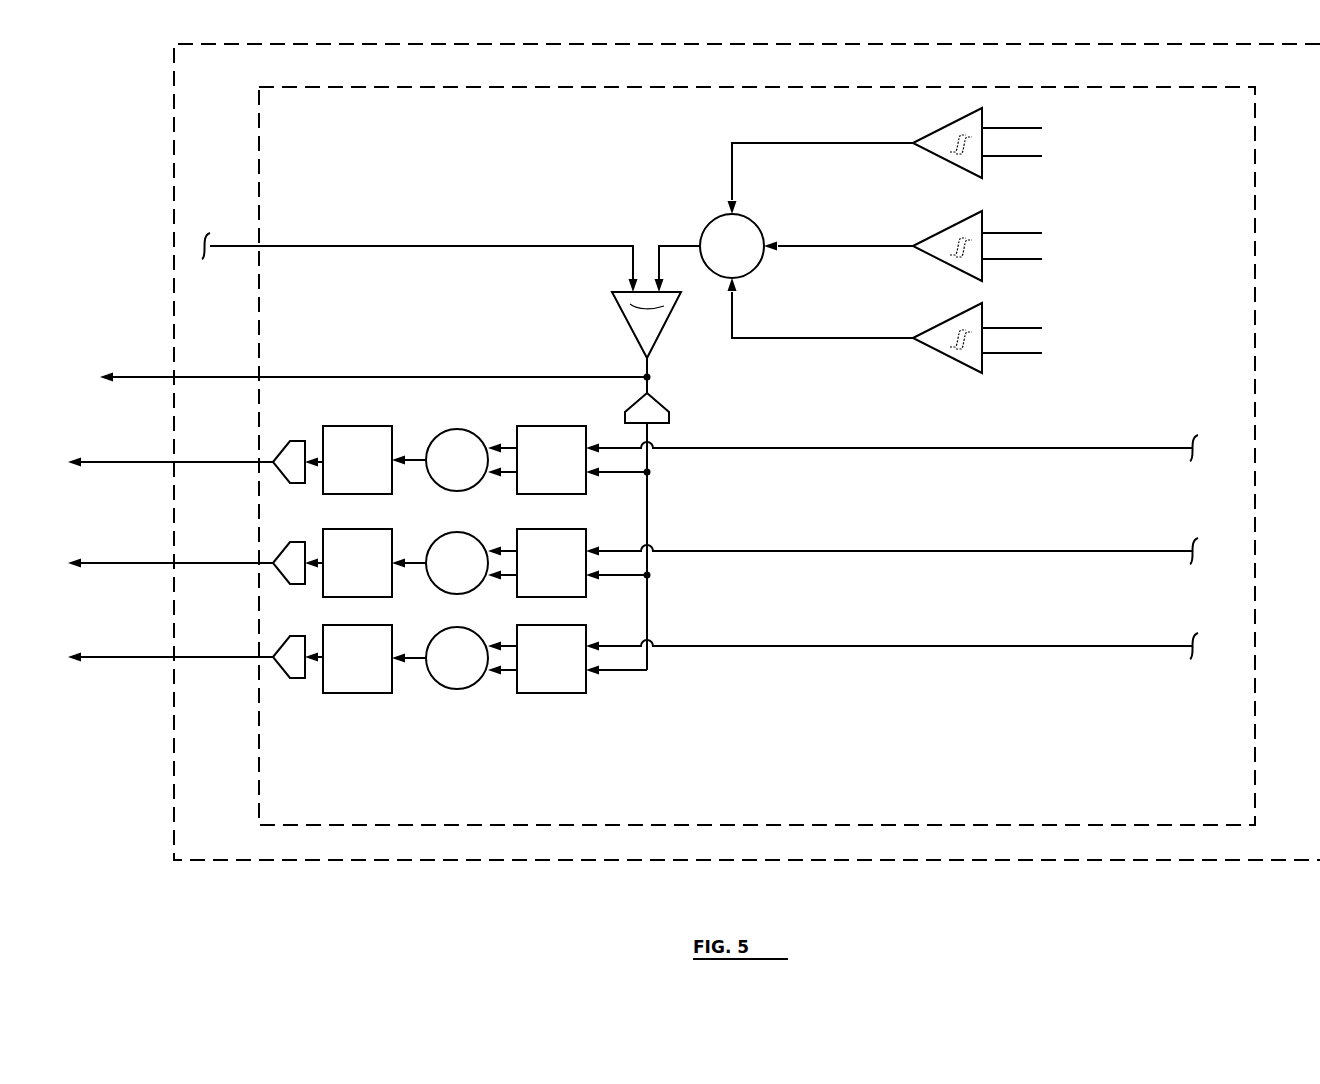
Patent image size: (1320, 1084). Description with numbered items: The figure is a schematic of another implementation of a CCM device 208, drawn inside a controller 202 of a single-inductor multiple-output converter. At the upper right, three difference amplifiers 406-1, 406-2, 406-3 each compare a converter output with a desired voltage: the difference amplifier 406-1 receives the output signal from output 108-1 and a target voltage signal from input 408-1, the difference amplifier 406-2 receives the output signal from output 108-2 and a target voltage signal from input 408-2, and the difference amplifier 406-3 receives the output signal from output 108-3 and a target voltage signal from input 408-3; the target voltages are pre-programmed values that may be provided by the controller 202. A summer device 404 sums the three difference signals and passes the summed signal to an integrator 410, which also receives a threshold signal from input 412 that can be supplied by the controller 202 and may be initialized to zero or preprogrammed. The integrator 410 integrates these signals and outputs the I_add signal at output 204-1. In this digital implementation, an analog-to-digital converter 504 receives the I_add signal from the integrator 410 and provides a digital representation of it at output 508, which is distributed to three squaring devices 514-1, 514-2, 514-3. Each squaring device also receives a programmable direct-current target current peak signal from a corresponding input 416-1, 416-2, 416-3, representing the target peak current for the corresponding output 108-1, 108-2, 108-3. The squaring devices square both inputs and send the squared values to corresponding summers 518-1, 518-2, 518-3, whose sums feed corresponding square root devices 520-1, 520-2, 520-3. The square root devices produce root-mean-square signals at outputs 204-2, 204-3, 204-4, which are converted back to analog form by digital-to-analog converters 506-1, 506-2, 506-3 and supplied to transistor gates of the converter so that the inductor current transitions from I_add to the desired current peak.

The controller 202 is at (747, 452).
The CCM device 208 is at (757, 456).
The input 412 is at (517, 246).
The summer device 404 is at (708, 228).
The difference amplifier 406-1 is at (942, 128).
The difference amplifier 406-2 is at (942, 231).
The difference amplifier 406-3 is at (942, 323).
The output 108-1 is at (1024, 128).
The output 108-2 is at (1024, 233).
The output 108-3 is at (1015, 328).
The input 408-1 is at (1024, 156).
The input 408-2 is at (1024, 259).
The input 408-3 is at (1019, 353).
The integrator 410 is at (622, 322).
The output 204-1 is at (168, 377).
The output 204-2 is at (168, 462).
The output 204-3 is at (168, 563).
The output 204-4 is at (168, 657).
The analog-to-digital converter 504 is at (662, 404).
The output 508 is at (651, 504).
The digital-to-analog converter 506-1 is at (280, 452).
The digital-to-analog converter 506-2 is at (280, 553).
The digital-to-analog converter 506-3 is at (280, 647).
The square root device 520-1 is at (344, 426).
The square root device 520-2 is at (344, 529).
The square root device 520-3 is at (344, 625).
The summer 518-1 is at (458, 429).
The summer 518-2 is at (444, 535).
The summer 518-3 is at (450, 628).
The squaring device 514-1 is at (553, 426).
The squaring device 514-2 is at (528, 529).
The squaring device 514-3 is at (537, 625).
The input 416-1 is at (922, 448).
The input 416-2 is at (922, 551).
The input 416-3 is at (922, 646).